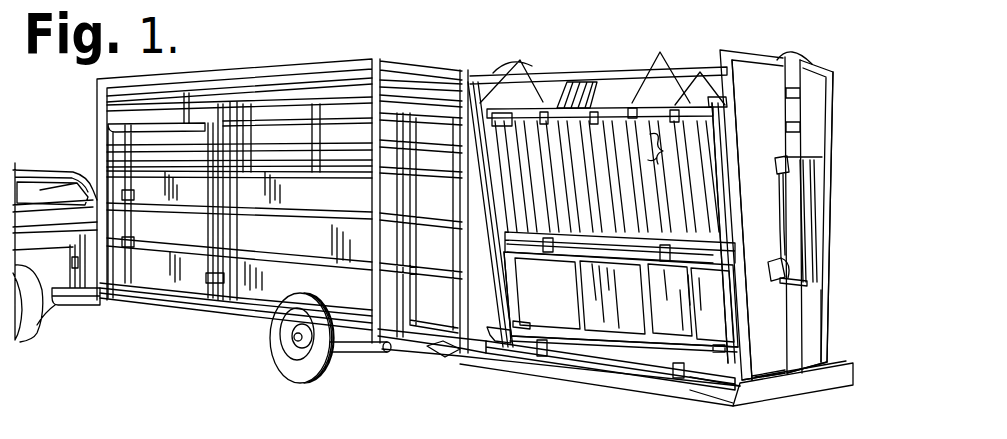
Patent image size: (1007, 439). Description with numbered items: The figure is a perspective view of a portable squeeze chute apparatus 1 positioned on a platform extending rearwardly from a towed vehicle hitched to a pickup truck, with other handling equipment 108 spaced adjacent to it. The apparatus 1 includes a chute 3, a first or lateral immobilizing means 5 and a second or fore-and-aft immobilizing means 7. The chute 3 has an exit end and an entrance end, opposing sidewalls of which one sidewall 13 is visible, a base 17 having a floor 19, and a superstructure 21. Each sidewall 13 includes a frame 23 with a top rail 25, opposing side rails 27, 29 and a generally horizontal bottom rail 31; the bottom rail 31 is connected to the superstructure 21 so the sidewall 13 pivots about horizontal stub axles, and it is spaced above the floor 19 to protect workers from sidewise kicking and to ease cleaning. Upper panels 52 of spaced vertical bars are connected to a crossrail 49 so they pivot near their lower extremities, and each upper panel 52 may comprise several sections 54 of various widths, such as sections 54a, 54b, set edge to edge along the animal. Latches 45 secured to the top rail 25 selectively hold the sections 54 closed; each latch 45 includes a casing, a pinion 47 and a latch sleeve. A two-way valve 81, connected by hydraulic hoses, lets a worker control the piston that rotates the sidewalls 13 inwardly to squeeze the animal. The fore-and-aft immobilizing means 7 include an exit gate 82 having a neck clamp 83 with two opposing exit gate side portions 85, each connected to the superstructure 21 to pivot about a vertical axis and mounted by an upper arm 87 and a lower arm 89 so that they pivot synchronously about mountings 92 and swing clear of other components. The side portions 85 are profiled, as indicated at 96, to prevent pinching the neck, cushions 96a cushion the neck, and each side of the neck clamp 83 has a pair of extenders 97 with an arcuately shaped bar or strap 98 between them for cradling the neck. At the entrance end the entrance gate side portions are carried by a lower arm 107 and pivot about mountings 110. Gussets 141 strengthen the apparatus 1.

The portable squeeze chute apparatus 1 is at (812, 50).
The chute 3 is at (637, 336).
The first or lateral immobilizing means 5 is at (722, 295).
The second or fore-and-aft immobilizing means 7 is at (822, 102).
The sidewall 13 is at (554, 299).
The base 17 is at (780, 388).
The floor 19 is at (580, 350).
The superstructure 21 is at (628, 82).
The frame 23 is at (722, 165).
The top rail 25 is at (722, 101).
The side rail 27 is at (514, 319).
The side rail 29 is at (724, 313).
The bottom rail 31 is at (670, 300).
The latch 45 is at (524, 109).
The pinion 47 is at (726, 252).
The crossrail 49 is at (618, 258).
The upper panel 52 is at (706, 147).
The section 54 is at (659, 148).
The section 54a is at (544, 112).
The section 54b is at (594, 112).
The two-way valve 81 is at (577, 82).
The exit gate 82 is at (808, 62).
The neck clamp 83 is at (820, 302).
The exit gate side portion 85 is at (774, 340).
The upper arm 87 is at (700, 84).
The lower arm 89 is at (716, 382).
The mountings 92 is at (678, 378).
The profile of exit gate side portions 96 is at (780, 246).
The cushions 96a is at (777, 177).
The extenders 97 is at (790, 286).
The arcuately shaped bar or strap 98 is at (813, 184).
The lower arm 107 is at (508, 345).
The other handling equipment 108 is at (433, 62).
The mountings 110 is at (542, 357).
The gussets 141 is at (494, 75).